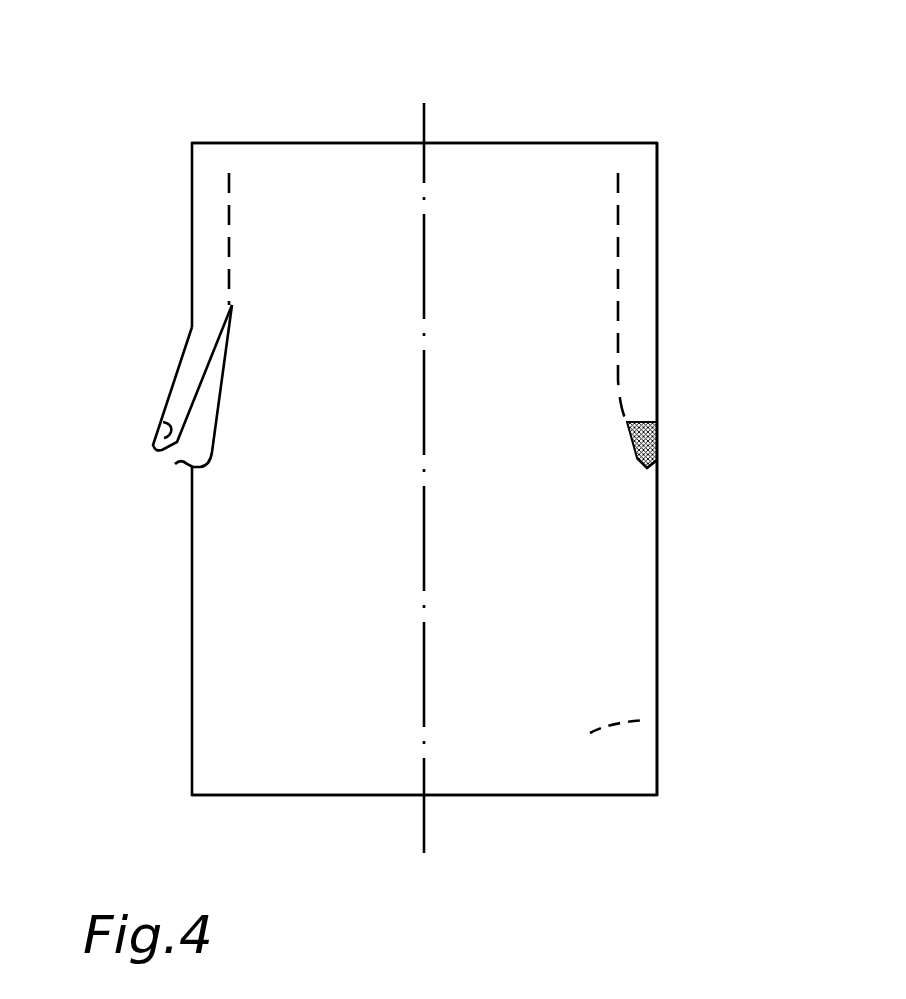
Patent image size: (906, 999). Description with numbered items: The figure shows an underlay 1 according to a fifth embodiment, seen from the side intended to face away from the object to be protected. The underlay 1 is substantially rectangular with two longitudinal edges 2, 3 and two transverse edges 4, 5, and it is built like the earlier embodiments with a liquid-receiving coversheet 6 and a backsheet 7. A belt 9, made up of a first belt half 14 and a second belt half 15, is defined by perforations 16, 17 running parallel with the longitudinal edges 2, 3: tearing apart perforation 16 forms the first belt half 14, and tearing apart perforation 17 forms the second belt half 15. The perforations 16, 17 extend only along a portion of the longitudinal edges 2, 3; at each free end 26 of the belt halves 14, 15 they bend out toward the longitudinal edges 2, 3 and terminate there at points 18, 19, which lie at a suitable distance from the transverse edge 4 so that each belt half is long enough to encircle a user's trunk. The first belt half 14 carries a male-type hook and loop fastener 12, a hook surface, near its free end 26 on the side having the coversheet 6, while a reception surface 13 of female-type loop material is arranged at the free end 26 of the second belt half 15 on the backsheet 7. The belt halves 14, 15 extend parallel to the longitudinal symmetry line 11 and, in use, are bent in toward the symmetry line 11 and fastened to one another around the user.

The underlay 1 is at (128, 63).
The longitudinal edge 2 is at (658, 535).
The longitudinal edge 3 is at (192, 646).
The transverse edge 4 is at (486, 143).
The transverse edge 5 is at (317, 795).
The liquid-receiving coversheet 6 is at (580, 613).
The backsheet 7 is at (657, 722).
The belt 9 is at (195, 326).
The longitudinal symmetry line 11 is at (425, 818).
The hook and loop fastener 12 is at (658, 442).
The reception surface 13 is at (182, 418).
The first belt half 14 is at (658, 327).
The second belt half 15 is at (163, 328).
The perforation 16 is at (618, 190).
The perforation 17 is at (228, 214).
The point 18 is at (658, 470).
The point 19 is at (175, 464).
The free end 26 is at (154, 452).